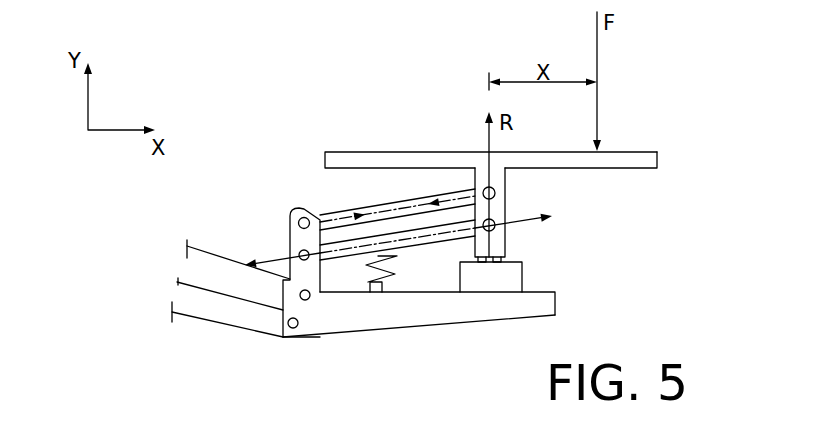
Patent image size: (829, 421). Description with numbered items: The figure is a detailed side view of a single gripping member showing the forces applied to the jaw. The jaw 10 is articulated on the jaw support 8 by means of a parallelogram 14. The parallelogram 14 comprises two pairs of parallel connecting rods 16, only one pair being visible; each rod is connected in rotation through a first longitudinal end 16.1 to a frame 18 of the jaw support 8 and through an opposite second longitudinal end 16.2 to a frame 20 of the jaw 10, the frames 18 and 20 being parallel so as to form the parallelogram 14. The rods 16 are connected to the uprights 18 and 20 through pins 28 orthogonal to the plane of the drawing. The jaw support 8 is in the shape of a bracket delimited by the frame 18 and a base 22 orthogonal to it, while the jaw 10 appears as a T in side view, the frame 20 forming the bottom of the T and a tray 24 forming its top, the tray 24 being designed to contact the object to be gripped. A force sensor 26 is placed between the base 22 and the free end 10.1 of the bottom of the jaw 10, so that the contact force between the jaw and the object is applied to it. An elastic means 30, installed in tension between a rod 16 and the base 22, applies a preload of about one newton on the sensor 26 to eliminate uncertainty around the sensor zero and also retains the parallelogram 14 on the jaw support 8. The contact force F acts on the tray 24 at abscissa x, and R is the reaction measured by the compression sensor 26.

The jaw support 8 is at (387, 345).
The jaw 10 is at (440, 151).
The free end of the bottom of the jaw 10.1 is at (494, 270).
The parallelogram 14 is at (413, 262).
The connecting rods 16 is at (381, 206).
The first longitudinal end 16.1 is at (306, 207).
The second longitudinal end 16.2 is at (495, 188).
The frame of the jaw support 18 is at (294, 237).
The frame of the jaw 20 is at (505, 216).
The base 22 is at (434, 320).
The tray 24 is at (650, 155).
The force sensor 26 is at (478, 284).
The pins 28 is at (290, 253).
The elastic means 30 is at (369, 287).